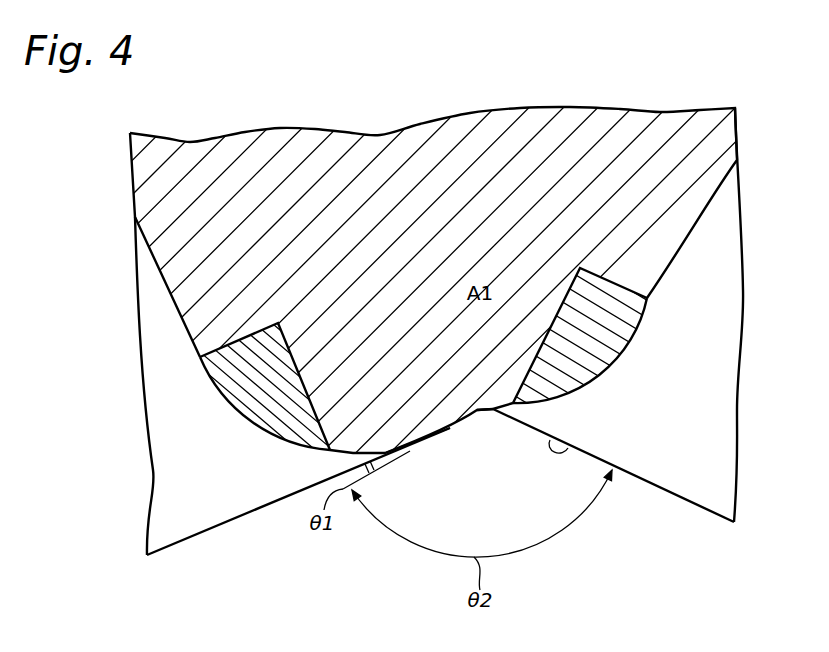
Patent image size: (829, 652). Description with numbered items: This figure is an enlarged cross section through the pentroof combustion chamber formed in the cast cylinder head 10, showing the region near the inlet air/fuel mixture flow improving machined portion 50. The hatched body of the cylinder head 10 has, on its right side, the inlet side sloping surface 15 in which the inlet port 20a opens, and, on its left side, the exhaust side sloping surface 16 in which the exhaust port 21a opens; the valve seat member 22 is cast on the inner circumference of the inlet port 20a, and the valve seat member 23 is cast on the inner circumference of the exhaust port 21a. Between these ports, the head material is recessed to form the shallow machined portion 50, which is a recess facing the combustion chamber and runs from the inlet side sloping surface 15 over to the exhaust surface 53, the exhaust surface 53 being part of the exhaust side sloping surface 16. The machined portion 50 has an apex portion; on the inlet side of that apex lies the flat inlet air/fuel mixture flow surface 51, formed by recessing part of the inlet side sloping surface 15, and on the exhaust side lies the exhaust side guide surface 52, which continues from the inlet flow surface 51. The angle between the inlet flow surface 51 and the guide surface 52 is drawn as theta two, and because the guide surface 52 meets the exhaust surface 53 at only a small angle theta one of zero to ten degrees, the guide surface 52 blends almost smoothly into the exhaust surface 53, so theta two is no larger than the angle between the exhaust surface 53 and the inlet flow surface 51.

The cylinder head 10 is at (437, 124).
The inlet side sloping surface 15 is at (673, 502).
The exhaust side sloping surface 16 is at (221, 533).
The inlet port 20a is at (710, 493).
The exhaust port 21a is at (181, 532).
The valve seat member 22 is at (628, 350).
The valve seat member 23 is at (237, 383).
The inlet air/fuel mixture flow improving machined portion 50 is at (641, 486).
The inlet air/fuel mixture flow surface 51 is at (568, 447).
The exhaust side guide surface 52 is at (448, 428).
The exhaust surface 53 is at (390, 453).